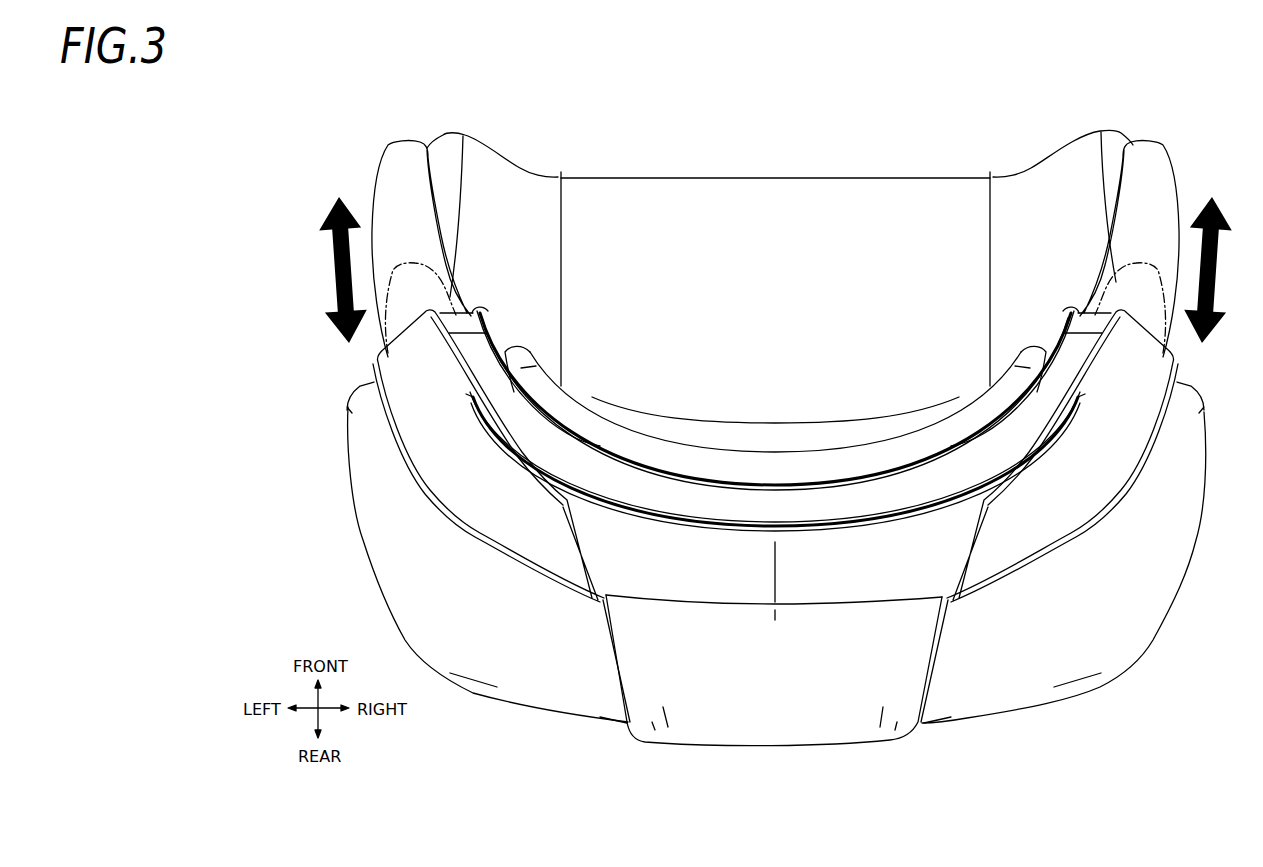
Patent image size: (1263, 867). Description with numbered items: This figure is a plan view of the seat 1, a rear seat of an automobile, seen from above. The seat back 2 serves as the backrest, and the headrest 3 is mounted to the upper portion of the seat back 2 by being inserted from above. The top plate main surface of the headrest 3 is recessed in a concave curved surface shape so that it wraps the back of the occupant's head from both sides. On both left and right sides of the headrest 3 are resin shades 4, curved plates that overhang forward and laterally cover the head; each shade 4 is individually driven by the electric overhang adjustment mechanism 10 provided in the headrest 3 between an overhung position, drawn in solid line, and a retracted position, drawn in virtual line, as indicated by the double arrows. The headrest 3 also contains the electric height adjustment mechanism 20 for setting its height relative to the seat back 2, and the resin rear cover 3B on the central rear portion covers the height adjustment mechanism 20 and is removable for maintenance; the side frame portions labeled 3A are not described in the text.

The seat 1 is at (1178, 688).
The seat back 2 is at (866, 205).
The headrest 3 is at (735, 502).
The seat cushion frame side portion 3A is at (390, 333).
The rear cover 3B is at (818, 697).
The shade 4 is at (407, 156).
The overhang adjustment mechanism 10 is at (775, 402).
The height adjustment mechanism 20 is at (775, 399).